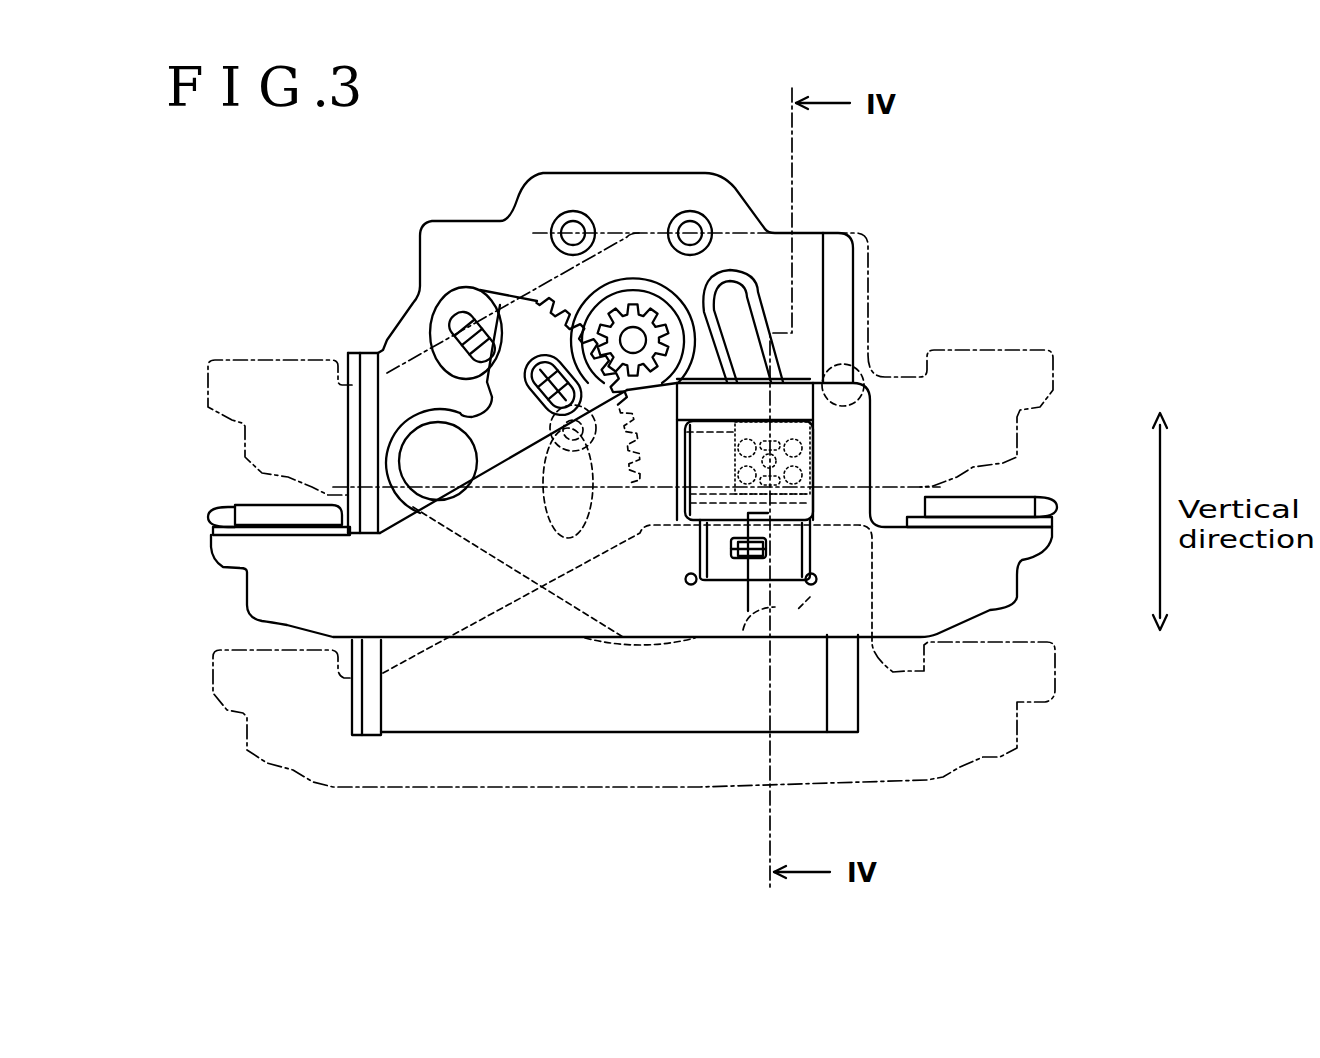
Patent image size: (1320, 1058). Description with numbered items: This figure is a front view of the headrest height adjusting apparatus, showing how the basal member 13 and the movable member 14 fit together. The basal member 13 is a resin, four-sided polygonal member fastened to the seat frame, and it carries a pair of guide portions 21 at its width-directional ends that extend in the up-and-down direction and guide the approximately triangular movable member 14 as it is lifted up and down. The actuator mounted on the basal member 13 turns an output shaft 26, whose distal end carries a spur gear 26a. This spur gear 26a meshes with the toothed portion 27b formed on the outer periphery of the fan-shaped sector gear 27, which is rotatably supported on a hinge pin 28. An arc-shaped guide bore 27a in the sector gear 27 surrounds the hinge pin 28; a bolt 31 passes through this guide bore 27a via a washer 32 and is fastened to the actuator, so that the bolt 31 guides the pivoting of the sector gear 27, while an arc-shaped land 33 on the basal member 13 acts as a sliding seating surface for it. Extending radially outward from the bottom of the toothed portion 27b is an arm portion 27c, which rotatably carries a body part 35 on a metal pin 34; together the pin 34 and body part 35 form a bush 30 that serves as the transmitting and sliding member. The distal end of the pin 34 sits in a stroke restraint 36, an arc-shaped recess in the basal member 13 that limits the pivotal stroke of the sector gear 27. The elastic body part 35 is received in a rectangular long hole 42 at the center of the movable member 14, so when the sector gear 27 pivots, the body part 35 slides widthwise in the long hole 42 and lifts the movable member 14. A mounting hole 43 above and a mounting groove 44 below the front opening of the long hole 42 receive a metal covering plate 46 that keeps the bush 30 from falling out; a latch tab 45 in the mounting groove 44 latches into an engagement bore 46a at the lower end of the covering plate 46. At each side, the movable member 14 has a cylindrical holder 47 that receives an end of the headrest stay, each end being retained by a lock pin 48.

The basal member 13 is at (843, 211).
The movable member 14 is at (1015, 600).
The guide portions 21 is at (348, 419).
The output shaft 26 is at (631, 190).
The spur gear 26a is at (633, 302).
The sector gear 27 is at (487, 295).
The guide bore 27a is at (491, 394).
The toothed portion 27b is at (565, 280).
The arm portion 27c is at (776, 620).
The hinge pin 28 is at (397, 455).
The bush 30 is at (926, 414).
The bolt 31 is at (553, 470).
The washer 32 is at (545, 430).
The land 33 is at (430, 297).
The pin 34 is at (813, 466).
The body part 35 is at (813, 431).
The stroke restraint 36 is at (745, 307).
The long hole 42 is at (686, 477).
The mounting hole 43 is at (858, 368).
The mounting groove 44 is at (713, 588).
The latch tab 45 is at (737, 570).
The covering plate 46 is at (795, 580).
The engagement bore 46a is at (735, 553).
The holder 47 is at (222, 547).
The lock pin 48 is at (225, 507).